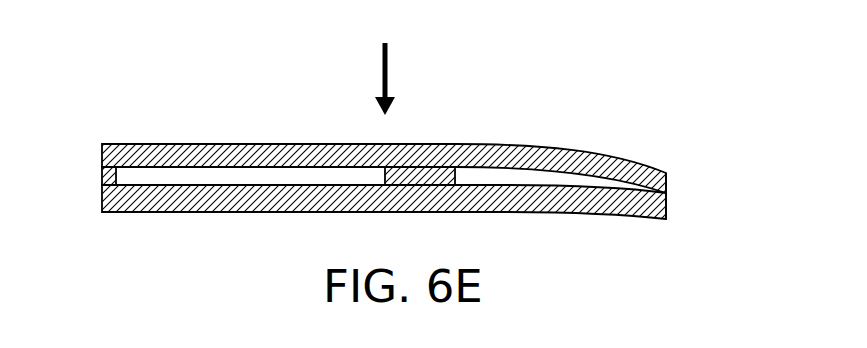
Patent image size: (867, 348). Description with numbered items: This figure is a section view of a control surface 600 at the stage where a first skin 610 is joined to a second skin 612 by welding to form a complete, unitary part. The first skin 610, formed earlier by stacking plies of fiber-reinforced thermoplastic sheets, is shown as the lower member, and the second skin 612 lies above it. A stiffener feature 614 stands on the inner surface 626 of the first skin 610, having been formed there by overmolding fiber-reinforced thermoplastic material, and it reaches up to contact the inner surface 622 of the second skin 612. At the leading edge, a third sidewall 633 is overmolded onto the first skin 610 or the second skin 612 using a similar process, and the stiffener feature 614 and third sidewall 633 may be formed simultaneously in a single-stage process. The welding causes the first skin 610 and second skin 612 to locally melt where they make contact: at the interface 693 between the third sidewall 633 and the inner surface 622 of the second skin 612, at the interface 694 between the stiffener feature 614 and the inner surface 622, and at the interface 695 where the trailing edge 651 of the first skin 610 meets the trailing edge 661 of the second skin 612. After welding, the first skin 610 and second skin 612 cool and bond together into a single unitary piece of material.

The control surface 600 is at (272, 80).
The first skin 610 is at (545, 213).
The second skin 612 is at (498, 152).
The stiffener structure 614 is at (445, 172).
The inner surface of second skin 622 is at (205, 168).
The inner surface of first skin 626 is at (232, 185).
The third sidewall 633 is at (107, 175).
The trailing edge of first skin 651 is at (668, 219).
The trailing edge of second skin 661 is at (667, 173).
The interface 693 is at (110, 150).
The interface 694 is at (412, 152).
The interface 695 is at (680, 192).